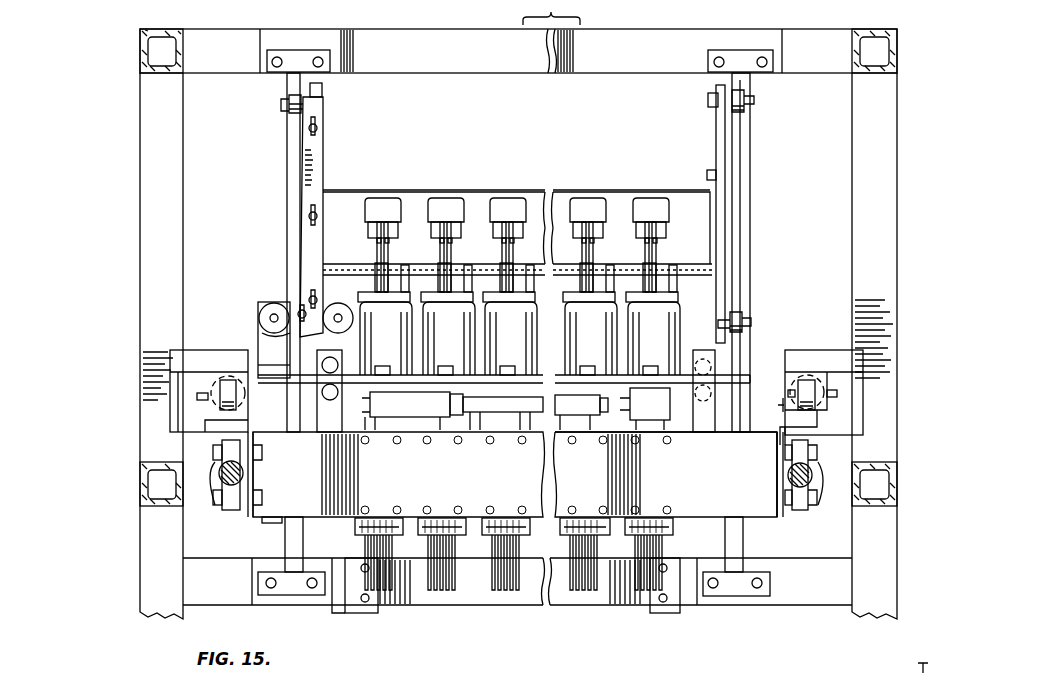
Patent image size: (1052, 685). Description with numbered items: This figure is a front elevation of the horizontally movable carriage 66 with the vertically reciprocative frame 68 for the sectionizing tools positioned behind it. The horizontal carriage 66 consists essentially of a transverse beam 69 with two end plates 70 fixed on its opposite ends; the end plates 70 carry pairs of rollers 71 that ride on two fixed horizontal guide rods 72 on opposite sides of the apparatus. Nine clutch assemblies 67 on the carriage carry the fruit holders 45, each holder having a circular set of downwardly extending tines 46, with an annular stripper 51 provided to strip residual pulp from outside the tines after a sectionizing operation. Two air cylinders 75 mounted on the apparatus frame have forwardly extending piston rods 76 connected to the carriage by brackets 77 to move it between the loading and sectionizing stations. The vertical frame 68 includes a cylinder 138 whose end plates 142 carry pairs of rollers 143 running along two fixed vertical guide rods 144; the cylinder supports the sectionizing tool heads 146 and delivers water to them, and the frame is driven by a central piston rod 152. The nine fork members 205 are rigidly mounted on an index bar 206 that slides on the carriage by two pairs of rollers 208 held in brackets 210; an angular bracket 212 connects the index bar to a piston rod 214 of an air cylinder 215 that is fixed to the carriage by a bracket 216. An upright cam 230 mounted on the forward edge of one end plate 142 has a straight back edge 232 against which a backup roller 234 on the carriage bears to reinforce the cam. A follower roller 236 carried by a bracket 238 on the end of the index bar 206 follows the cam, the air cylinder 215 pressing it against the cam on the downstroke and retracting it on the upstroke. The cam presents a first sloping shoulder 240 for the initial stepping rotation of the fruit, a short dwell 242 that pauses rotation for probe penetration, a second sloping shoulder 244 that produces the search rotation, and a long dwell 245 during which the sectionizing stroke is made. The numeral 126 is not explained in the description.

The fruit holder 45 is at (430, 578).
The tines 46 is at (638, 578).
The annular stripper 51 is at (492, 537).
The horizontal carriage 66 is at (274, 522).
The clutch assembly 67 is at (420, 266).
The vertically reciprocative frame 68 is at (474, 192).
The transverse beam 69 is at (515, 474).
The end plate 70 is at (250, 520).
The rollers 71 is at (230, 462).
The horizontal guide rod 72 is at (243, 473).
The air cylinder 75 is at (212, 384).
The piston rod 76 is at (235, 384).
The bracket 77 is at (795, 412).
The cam 126 is at (891, 662).
The cylinder 138 is at (560, 196).
The end plate 142 is at (322, 90).
The rollers 143 is at (283, 102).
The vertical guide rod 144 is at (297, 176).
The sectionizing tool head 146 is at (381, 207).
The central piston rod 152 is at (602, 255).
The fork member 205 is at (655, 400).
The index bar 206 is at (752, 378).
The rollers 208 is at (328, 392).
The bracket 210 is at (332, 432).
The angular bracket 212 is at (592, 416).
The piston rod 214 is at (575, 410).
The air cylinder 215 is at (383, 412).
The bracket 216 is at (442, 425).
The upright cam 230 is at (318, 150).
The straight back edge 232 is at (323, 114).
The backup roller 234 is at (338, 304).
The follower roller 236 is at (270, 302).
The bracket 238 is at (258, 312).
The first sloping shoulder 240 is at (285, 331).
The first dwell 242 is at (298, 292).
The second sloping shoulder 244 is at (300, 265).
The long dwell 245 is at (303, 140).